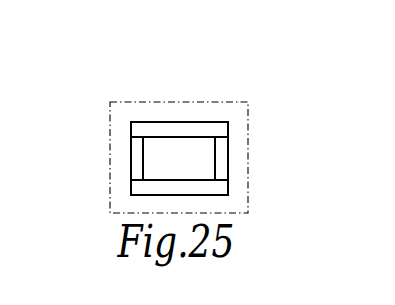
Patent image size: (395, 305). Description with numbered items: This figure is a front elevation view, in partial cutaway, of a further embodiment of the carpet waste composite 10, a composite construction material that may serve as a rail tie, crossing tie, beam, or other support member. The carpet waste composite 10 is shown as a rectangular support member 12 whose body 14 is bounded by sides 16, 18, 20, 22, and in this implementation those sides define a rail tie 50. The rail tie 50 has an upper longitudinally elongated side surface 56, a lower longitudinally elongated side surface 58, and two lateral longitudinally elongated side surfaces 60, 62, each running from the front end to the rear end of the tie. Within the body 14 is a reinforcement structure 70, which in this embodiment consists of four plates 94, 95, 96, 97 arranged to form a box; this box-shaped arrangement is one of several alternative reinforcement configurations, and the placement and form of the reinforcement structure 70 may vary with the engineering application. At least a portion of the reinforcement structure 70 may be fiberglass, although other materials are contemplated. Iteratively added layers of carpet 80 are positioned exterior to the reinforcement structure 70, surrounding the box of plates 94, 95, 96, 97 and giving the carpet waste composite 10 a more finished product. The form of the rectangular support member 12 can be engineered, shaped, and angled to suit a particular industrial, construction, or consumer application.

The carpet waste composite 10 is at (240, 83).
The rectangular support member 12 is at (233, 189).
The body 14 is at (131, 166).
The side 16 is at (185, 122).
The side 18 is at (229, 128).
The side 20 is at (219, 195).
The side 22 is at (131, 146).
The rail tie 50 is at (206, 118).
The upper longitudinally elongated side surface 56 is at (168, 122).
The lower longitudinally elongated side surface 58 is at (135, 195).
The lateral longitudinally elongated side surface 60 is at (229, 148).
The lateral longitudinally elongated side surface 62 is at (136, 140).
The reinforcement structure 70 is at (127, 178).
The layers of carpet 80 is at (250, 108).
The plate 94 is at (222, 165).
The plate 95 is at (131, 187).
The plate 96 is at (138, 135).
The plate 97 is at (155, 122).